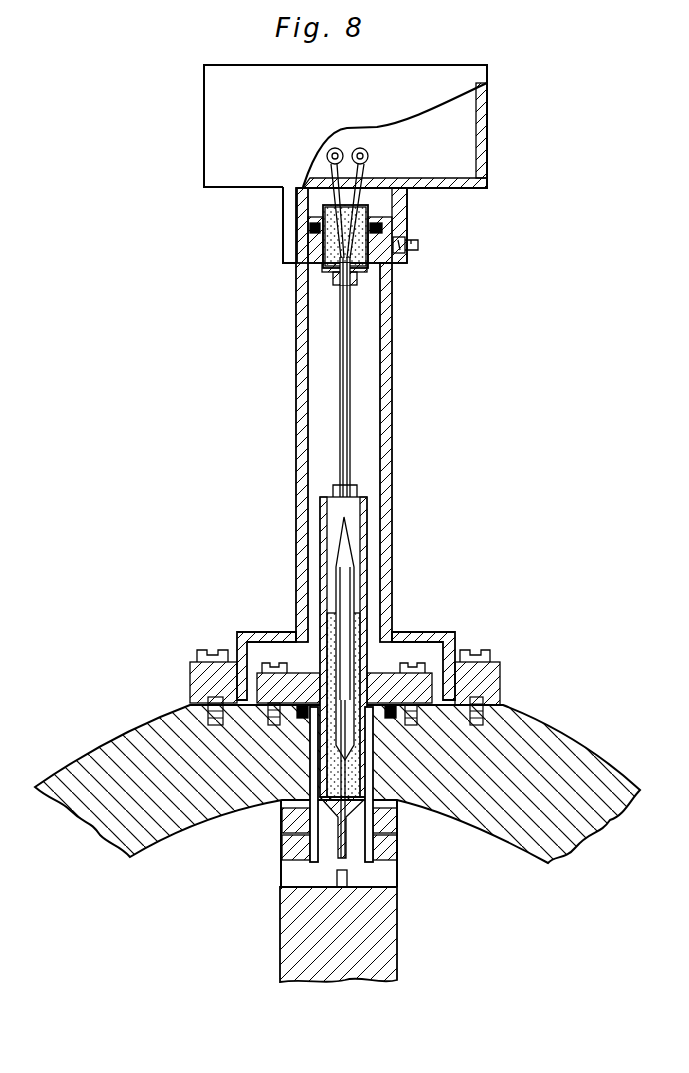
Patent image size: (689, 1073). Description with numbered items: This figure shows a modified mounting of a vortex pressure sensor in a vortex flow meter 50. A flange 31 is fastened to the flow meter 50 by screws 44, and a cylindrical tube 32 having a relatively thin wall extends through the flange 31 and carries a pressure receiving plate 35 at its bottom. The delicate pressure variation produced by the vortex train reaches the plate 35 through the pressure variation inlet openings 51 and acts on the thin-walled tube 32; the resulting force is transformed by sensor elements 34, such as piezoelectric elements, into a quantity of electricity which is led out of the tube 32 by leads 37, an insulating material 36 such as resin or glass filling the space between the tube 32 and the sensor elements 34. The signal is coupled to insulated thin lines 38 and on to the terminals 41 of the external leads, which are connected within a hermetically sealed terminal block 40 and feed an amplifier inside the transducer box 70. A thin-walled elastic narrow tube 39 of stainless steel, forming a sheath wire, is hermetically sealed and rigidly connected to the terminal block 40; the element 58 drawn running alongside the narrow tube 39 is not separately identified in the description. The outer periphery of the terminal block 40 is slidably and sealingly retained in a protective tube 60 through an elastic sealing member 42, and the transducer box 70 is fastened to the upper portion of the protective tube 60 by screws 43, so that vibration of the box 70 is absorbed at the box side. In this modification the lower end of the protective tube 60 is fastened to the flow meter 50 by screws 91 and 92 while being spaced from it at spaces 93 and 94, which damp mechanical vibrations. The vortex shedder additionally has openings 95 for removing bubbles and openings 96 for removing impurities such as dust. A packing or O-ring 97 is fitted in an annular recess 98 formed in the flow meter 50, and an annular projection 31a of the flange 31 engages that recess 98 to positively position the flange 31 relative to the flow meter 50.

The transducer box 70 is at (222, 133).
The terminals of external leads 41 is at (370, 157).
The elastic sealing member 42 is at (383, 229).
The screws 43 is at (418, 252).
The insulating material 36 is at (327, 246).
The terminal block 40 is at (333, 283).
The protective tube 60 is at (393, 329).
The elastic narrow tube 39 is at (350, 372).
The lead wire 58 is at (350, 415).
The insulated thin lines 38 is at (345, 532).
The leads 37 is at (360, 575).
The cylindrical tube 32 is at (362, 620).
The flange 31 is at (383, 677).
The annular projection 31a is at (463, 757).
The screws 44 is at (270, 665).
The screw 91 is at (203, 648).
The screw 92 is at (490, 650).
The space 93 is at (238, 700).
The space 94 is at (452, 693).
The O-ring 97 is at (297, 720).
The openings 95 is at (285, 800).
The vortex flow meter 50 is at (530, 743).
The sensor elements 34 is at (300, 797).
The openings 51 is at (282, 838).
The openings 96 is at (278, 880).
The annular recess 98 is at (550, 793).
The pressure receiving plate 35 is at (347, 850).